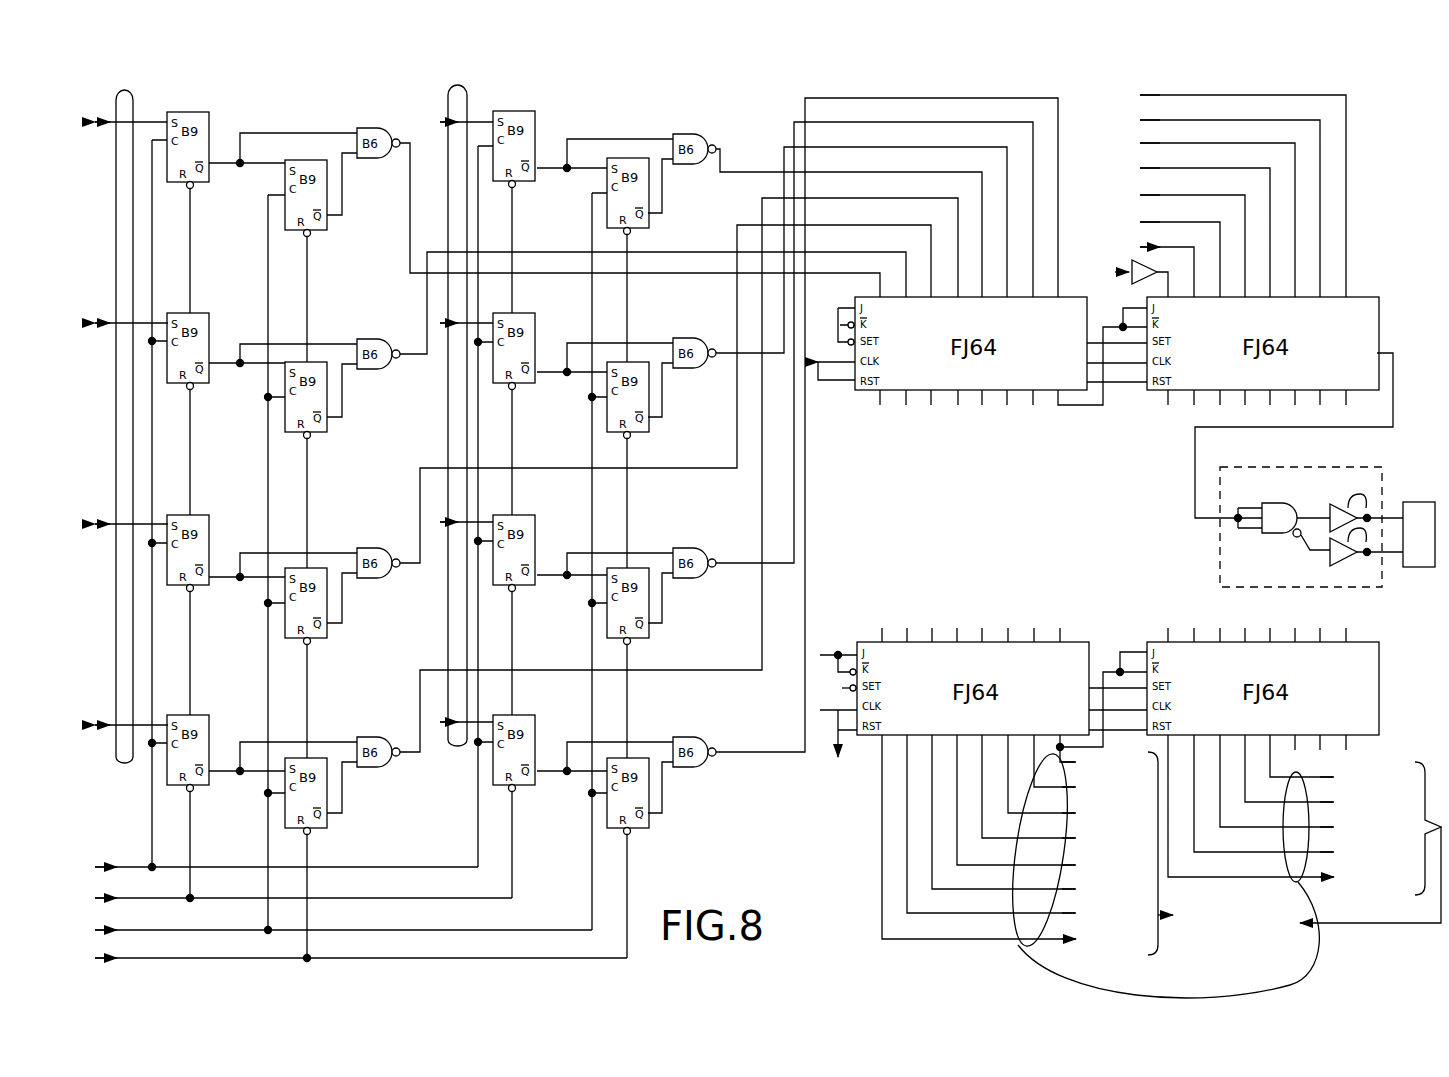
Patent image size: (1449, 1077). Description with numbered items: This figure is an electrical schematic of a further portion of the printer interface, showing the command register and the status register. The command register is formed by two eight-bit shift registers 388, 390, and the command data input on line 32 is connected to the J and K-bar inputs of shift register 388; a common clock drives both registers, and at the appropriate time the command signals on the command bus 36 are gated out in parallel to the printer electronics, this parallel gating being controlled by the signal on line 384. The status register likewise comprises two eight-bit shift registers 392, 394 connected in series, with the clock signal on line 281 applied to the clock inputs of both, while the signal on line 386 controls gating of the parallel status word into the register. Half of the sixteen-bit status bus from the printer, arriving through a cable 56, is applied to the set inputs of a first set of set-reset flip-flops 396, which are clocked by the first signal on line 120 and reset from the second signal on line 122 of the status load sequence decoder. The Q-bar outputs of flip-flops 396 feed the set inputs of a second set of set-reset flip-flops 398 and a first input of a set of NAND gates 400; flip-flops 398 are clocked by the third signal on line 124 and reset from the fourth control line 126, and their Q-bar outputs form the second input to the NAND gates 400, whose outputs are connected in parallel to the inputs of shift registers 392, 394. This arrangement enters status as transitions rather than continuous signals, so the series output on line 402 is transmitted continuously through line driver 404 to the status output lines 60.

The cable 56 is at (130, 750).
The first set of set-reset flip-flops 396 is at (190, 112).
The second set of set-reset flip-flops 398 is at (316, 158).
The NAND gates 400 is at (378, 128).
The line carrying the first signal 120 is at (118, 868).
The line carrying the second signal 122 is at (152, 898).
The line carrying the third signal 124 is at (162, 930).
The fourth control line 126 is at (180, 958).
The line 386 is at (818, 340).
The shift register 392 is at (975, 408).
The shift register 394 is at (1160, 408).
The line 281 is at (828, 392).
The line 402 is at (1395, 385).
The line driver 404 is at (1348, 467).
The status output lines 60 is at (1410, 570).
The shift register 388 is at (988, 640).
The shift register 390 is at (1168, 640).
The line 32 is at (834, 655).
The line 384 is at (838, 688).
The command bus 36 is at (1318, 952).